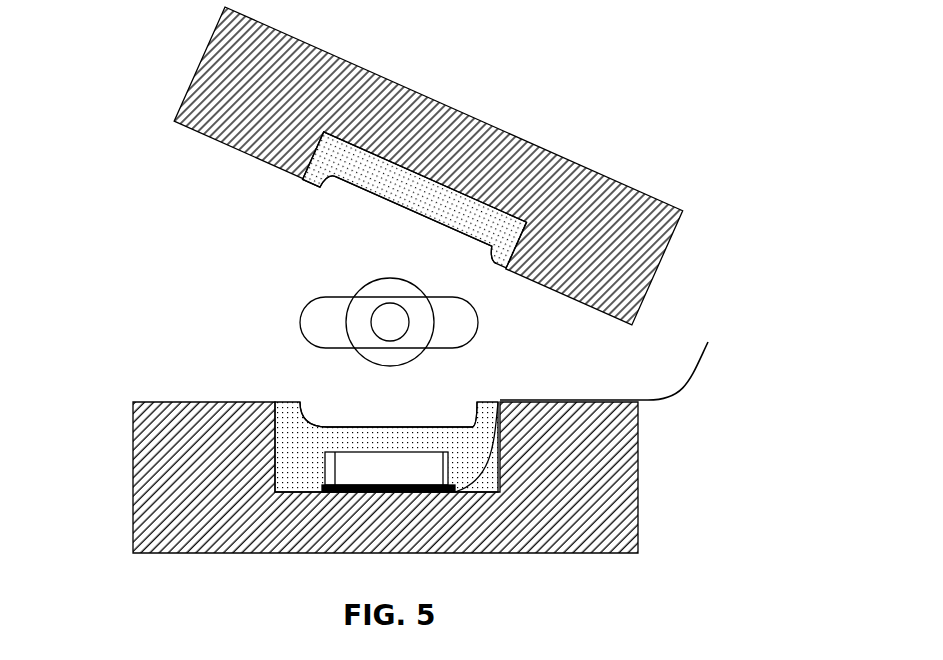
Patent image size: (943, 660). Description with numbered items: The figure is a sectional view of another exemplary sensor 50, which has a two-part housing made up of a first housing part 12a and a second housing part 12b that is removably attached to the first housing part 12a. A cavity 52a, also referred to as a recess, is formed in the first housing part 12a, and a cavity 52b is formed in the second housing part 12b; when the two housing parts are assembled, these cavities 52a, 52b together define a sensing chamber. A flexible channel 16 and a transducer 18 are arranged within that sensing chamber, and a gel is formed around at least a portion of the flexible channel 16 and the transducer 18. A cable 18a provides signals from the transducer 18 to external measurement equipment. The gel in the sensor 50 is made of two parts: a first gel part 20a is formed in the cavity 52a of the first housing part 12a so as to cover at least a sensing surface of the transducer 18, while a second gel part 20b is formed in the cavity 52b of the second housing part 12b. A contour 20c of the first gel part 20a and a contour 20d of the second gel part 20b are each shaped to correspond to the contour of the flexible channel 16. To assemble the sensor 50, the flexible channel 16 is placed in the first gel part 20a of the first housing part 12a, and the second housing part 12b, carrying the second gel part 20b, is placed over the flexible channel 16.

The sensor 50 is at (642, 113).
The second housing part 12b is at (662, 267).
The first housing part 12a is at (641, 493).
The cavity 52b is at (310, 155).
The cavity 52a is at (502, 473).
The second gel part 20b is at (305, 182).
The contour 20d is at (437, 220).
The first gel part 20a is at (297, 425).
The contour 20c is at (398, 420).
The flexible channel 16 is at (297, 322).
The transducer 18 is at (353, 468).
The cable 18a is at (702, 382).